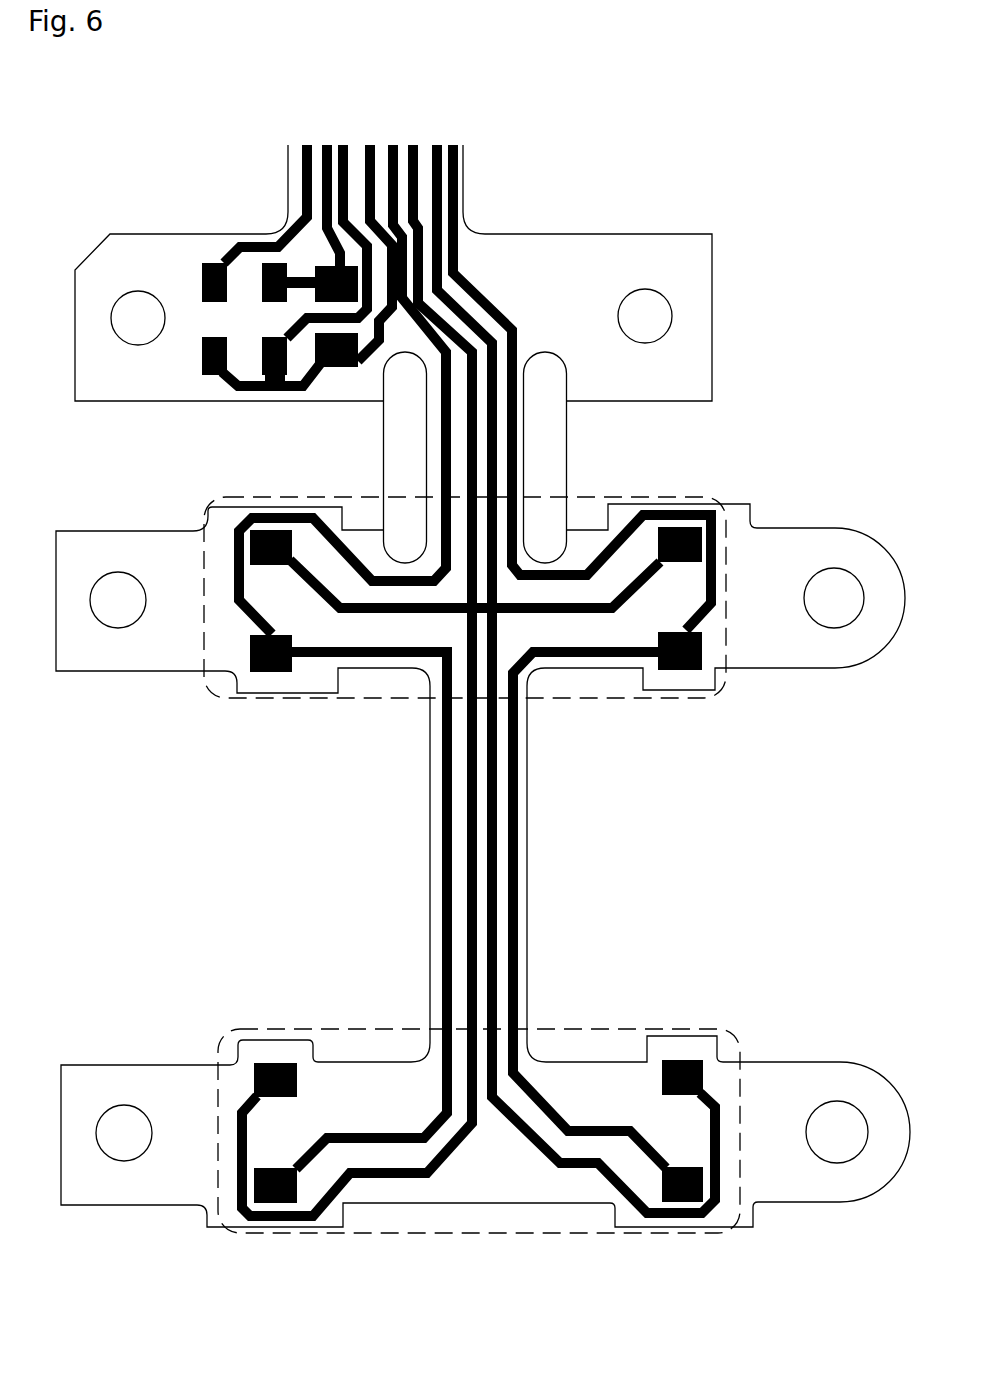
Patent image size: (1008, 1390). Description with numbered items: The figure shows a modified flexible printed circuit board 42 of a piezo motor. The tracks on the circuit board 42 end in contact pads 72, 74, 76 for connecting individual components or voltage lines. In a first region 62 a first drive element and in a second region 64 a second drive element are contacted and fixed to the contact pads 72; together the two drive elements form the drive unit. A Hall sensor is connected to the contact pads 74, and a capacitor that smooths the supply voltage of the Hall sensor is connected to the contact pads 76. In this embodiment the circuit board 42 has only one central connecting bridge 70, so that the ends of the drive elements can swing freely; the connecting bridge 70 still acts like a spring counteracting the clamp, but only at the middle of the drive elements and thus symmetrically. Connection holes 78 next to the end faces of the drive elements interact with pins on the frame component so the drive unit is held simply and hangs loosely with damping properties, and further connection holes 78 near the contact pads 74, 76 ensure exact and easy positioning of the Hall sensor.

The circuit board 42 is at (545, 220).
The first region 62 is at (227, 1041).
The second region 64 is at (205, 517).
The central connecting bridge 70 is at (482, 940).
The contact pads 72 is at (288, 565).
The contact pads 74 is at (258, 250).
The contact pads 76 is at (352, 300).
The connection holes 78 is at (131, 314).